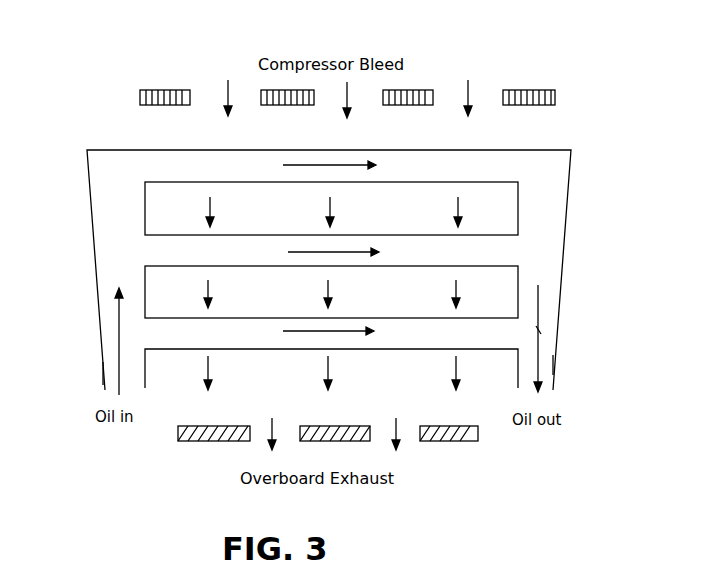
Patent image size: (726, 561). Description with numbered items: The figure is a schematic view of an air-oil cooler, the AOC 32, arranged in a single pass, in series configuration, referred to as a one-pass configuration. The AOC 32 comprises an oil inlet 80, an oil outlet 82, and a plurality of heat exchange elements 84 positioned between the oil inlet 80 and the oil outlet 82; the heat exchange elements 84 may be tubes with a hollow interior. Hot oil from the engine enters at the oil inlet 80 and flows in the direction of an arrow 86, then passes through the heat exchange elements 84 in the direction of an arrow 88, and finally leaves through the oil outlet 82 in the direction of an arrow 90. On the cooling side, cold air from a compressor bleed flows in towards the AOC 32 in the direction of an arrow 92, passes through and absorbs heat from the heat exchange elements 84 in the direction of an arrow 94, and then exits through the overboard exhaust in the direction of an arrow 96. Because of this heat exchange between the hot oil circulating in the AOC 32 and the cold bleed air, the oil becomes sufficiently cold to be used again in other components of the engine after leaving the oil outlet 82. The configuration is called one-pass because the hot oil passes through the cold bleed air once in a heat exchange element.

The AOC 32 is at (70, 218).
The oil inlet 80 is at (112, 370).
The oil outlet 82 is at (548, 364).
The heat exchange elements 84 is at (220, 268).
The arrow 86 is at (118, 333).
The arrow 88 is at (346, 251).
The arrow 90 is at (540, 330).
The arrow 92 is at (478, 97).
The arrow 94 is at (454, 291).
The arrow 96 is at (398, 432).